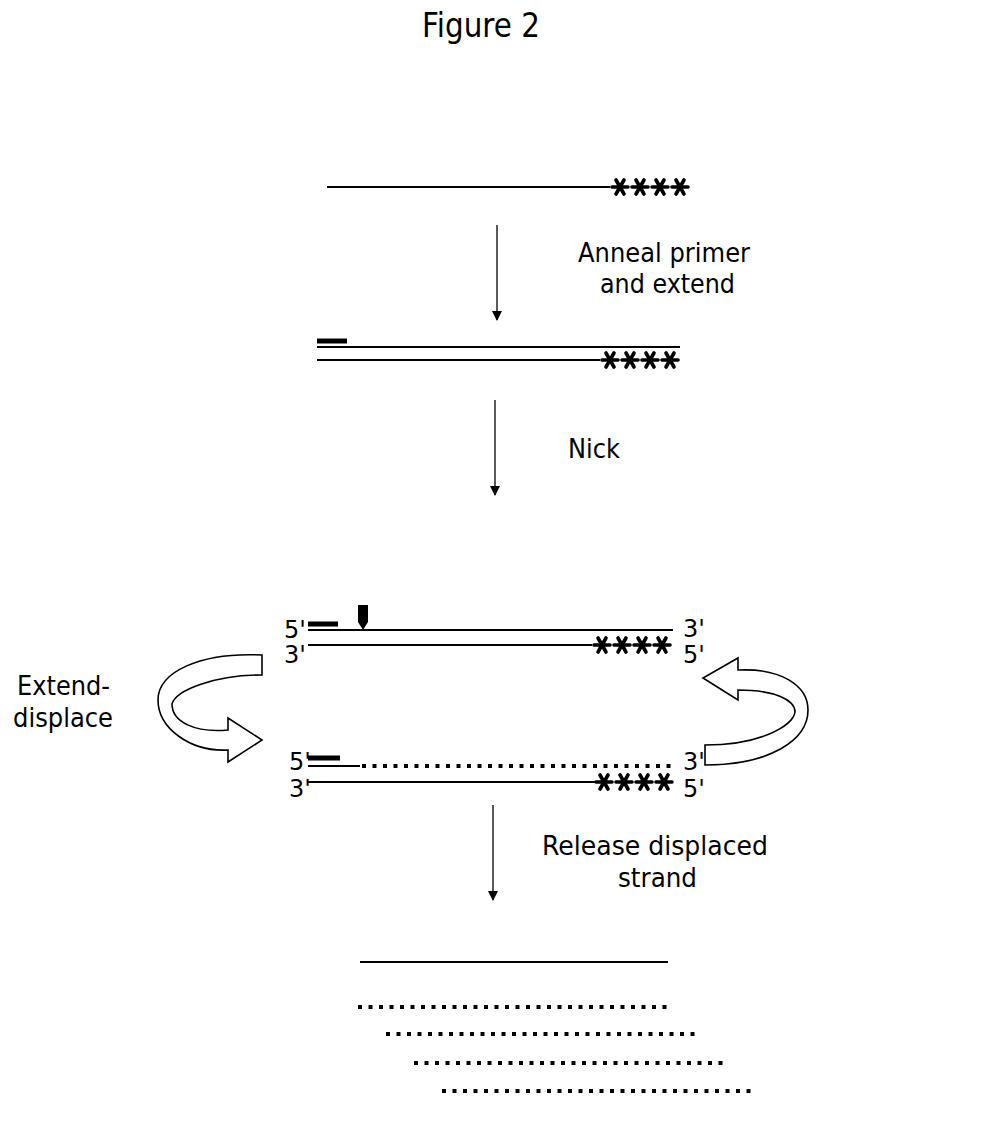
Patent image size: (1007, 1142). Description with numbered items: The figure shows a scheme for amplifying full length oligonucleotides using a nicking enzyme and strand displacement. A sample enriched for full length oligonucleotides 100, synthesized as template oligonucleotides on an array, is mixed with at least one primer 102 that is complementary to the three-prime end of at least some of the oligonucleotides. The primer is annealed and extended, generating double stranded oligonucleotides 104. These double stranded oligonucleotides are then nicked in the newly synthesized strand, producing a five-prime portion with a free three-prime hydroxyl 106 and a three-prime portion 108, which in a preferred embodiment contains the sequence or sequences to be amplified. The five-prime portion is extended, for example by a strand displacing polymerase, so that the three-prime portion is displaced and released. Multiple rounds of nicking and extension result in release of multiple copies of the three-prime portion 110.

The sample enriched for full length oligonucleotides 100 is at (490, 185).
The primer 102 is at (317, 339).
The double stranded oligonucleotides 104 is at (714, 350).
The 5' portion with a free 3' hydroxyl 106 is at (367, 594).
The 3' portion 108 is at (370, 588).
The multiple copies of the 3' portion 110 is at (803, 958).